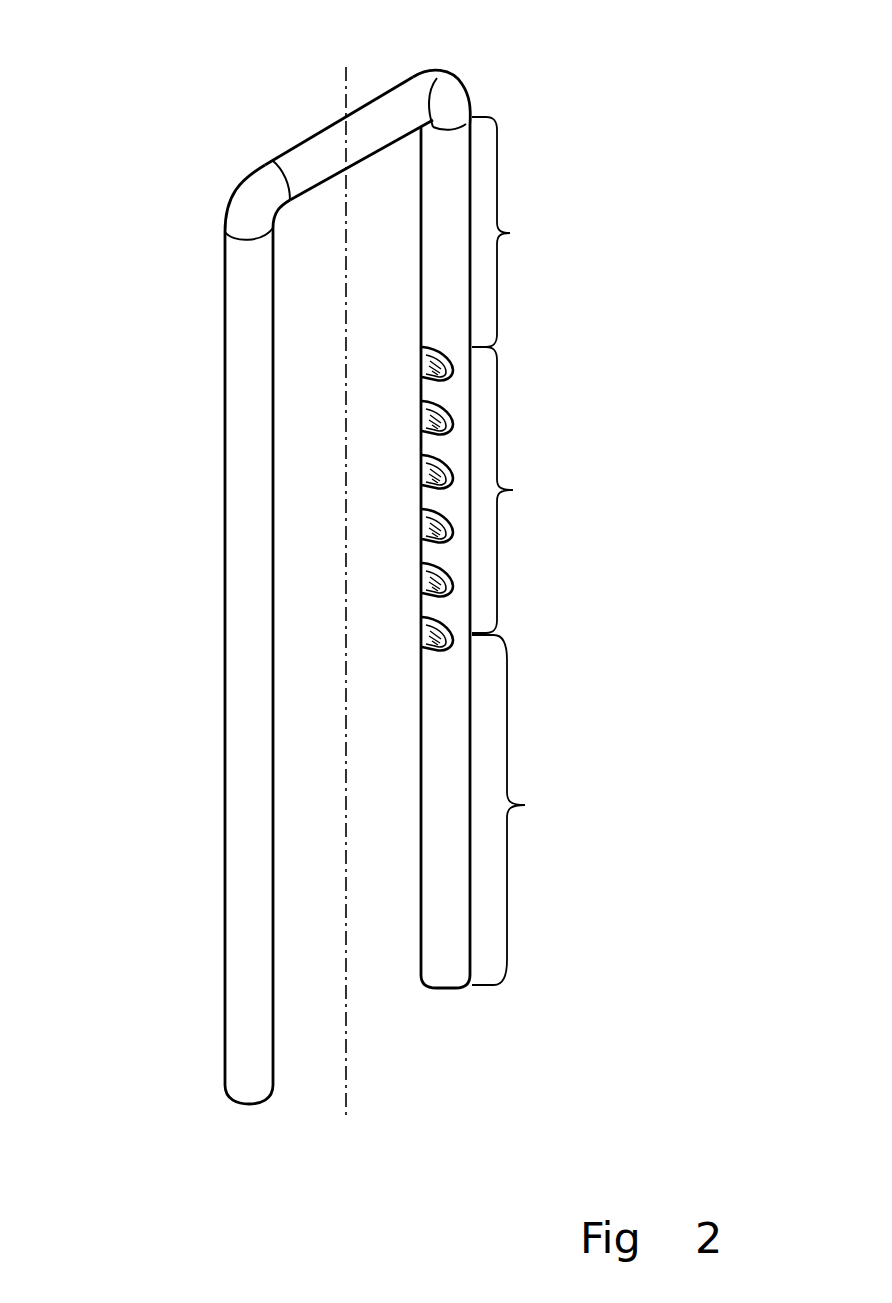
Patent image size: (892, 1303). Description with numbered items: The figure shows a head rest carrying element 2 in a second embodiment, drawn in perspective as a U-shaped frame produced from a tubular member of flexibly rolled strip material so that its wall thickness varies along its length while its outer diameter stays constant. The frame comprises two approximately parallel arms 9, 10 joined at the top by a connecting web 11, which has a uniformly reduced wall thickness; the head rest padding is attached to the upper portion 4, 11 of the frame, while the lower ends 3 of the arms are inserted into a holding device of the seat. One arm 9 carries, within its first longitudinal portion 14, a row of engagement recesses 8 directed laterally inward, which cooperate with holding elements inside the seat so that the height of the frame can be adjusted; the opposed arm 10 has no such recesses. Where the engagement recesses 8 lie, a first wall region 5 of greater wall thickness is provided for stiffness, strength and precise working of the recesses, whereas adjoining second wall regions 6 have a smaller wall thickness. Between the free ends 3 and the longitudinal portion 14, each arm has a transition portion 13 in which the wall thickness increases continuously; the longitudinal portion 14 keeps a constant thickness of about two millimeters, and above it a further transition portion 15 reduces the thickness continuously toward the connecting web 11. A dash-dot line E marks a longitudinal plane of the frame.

The head rest carrying element 2 is at (650, 97).
The lower end 3 is at (447, 991).
The upper portion 4 is at (440, 580).
The first wall region 5 is at (380, 499).
The second wall region 6 is at (417, 863).
The engagement recess 8 is at (422, 535).
The arm 9 is at (477, 160).
The arm 10 is at (274, 552).
The connecting web 11 is at (381, 107).
The transition portion 13 is at (521, 810).
The first longitudinal portion 14 is at (514, 490).
The transition portion 15 is at (514, 232).
The plane E is at (349, 1024).